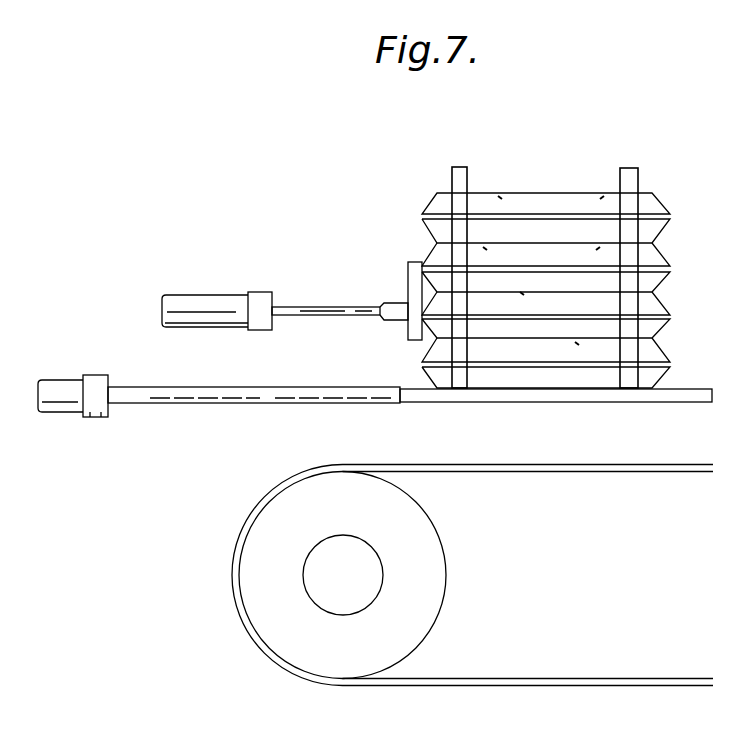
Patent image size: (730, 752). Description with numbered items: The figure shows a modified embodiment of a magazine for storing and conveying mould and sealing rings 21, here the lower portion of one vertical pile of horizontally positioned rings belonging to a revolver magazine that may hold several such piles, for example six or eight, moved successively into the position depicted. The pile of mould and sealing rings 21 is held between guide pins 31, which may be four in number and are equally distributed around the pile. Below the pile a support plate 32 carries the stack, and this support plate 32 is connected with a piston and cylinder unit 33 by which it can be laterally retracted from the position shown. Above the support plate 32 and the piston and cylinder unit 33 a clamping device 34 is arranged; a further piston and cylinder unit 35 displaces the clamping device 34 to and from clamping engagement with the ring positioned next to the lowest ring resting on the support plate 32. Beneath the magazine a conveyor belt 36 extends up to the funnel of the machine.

The mould and sealing rings 21 is at (655, 275).
The guide pins 31 is at (457, 170).
The support plate 32 is at (605, 397).
The piston and cylinder unit 33 is at (77, 408).
The clamping device 34 is at (412, 283).
The piston and cylinder unit 35 is at (203, 300).
The conveyor belt 36 is at (670, 462).